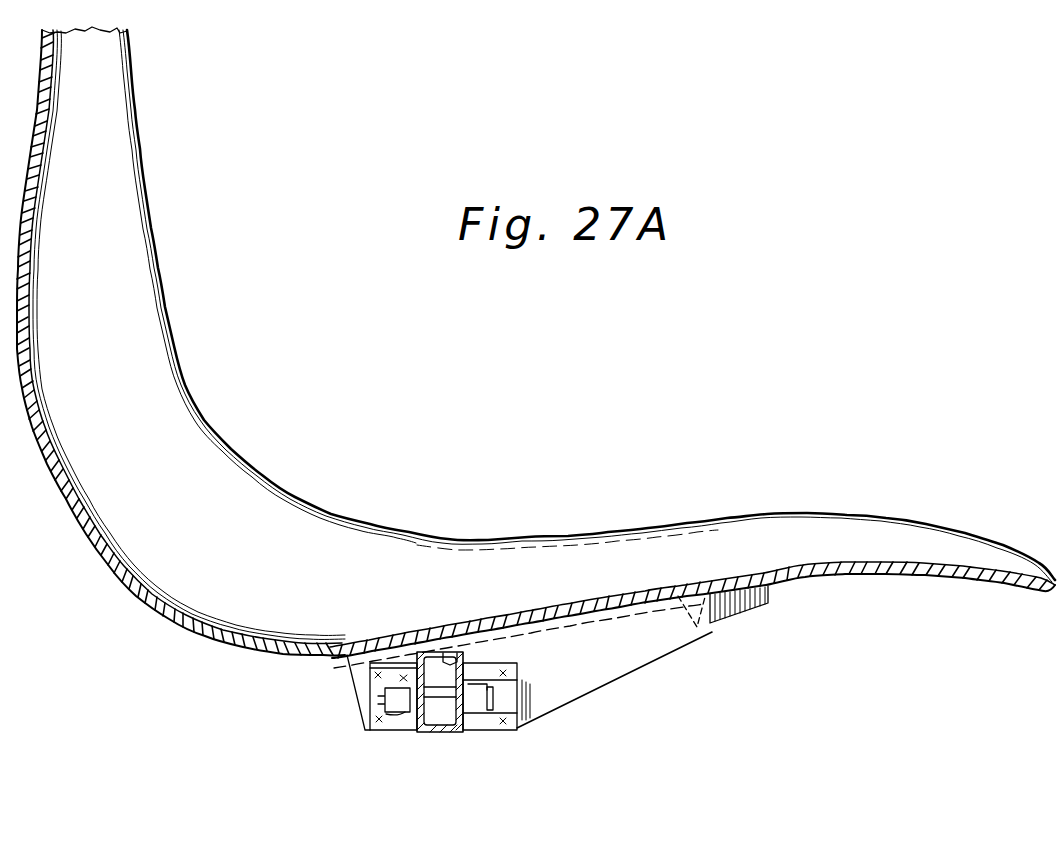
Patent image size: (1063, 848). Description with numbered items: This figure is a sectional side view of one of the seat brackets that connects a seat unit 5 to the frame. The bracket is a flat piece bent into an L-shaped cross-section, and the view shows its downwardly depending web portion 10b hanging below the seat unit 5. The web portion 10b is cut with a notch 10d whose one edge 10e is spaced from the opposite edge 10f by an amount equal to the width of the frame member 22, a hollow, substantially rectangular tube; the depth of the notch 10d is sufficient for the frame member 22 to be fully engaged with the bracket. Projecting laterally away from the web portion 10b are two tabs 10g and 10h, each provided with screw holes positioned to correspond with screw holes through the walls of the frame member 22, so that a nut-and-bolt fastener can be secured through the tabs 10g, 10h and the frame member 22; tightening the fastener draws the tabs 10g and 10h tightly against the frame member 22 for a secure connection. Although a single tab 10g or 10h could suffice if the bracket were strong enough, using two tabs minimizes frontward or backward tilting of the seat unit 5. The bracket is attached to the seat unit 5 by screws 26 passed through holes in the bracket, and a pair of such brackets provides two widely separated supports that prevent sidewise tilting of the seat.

The seat unit 5 is at (152, 318).
The screws 26 is at (340, 674).
The downwardly depending web portion 10b is at (632, 652).
The notch 10d is at (465, 662).
The tab 10h is at (468, 682).
The notch edge 10e is at (418, 728).
The frame member 22 is at (437, 733).
The opposite notch edge 10f is at (463, 730).
The tab 10g is at (370, 718).